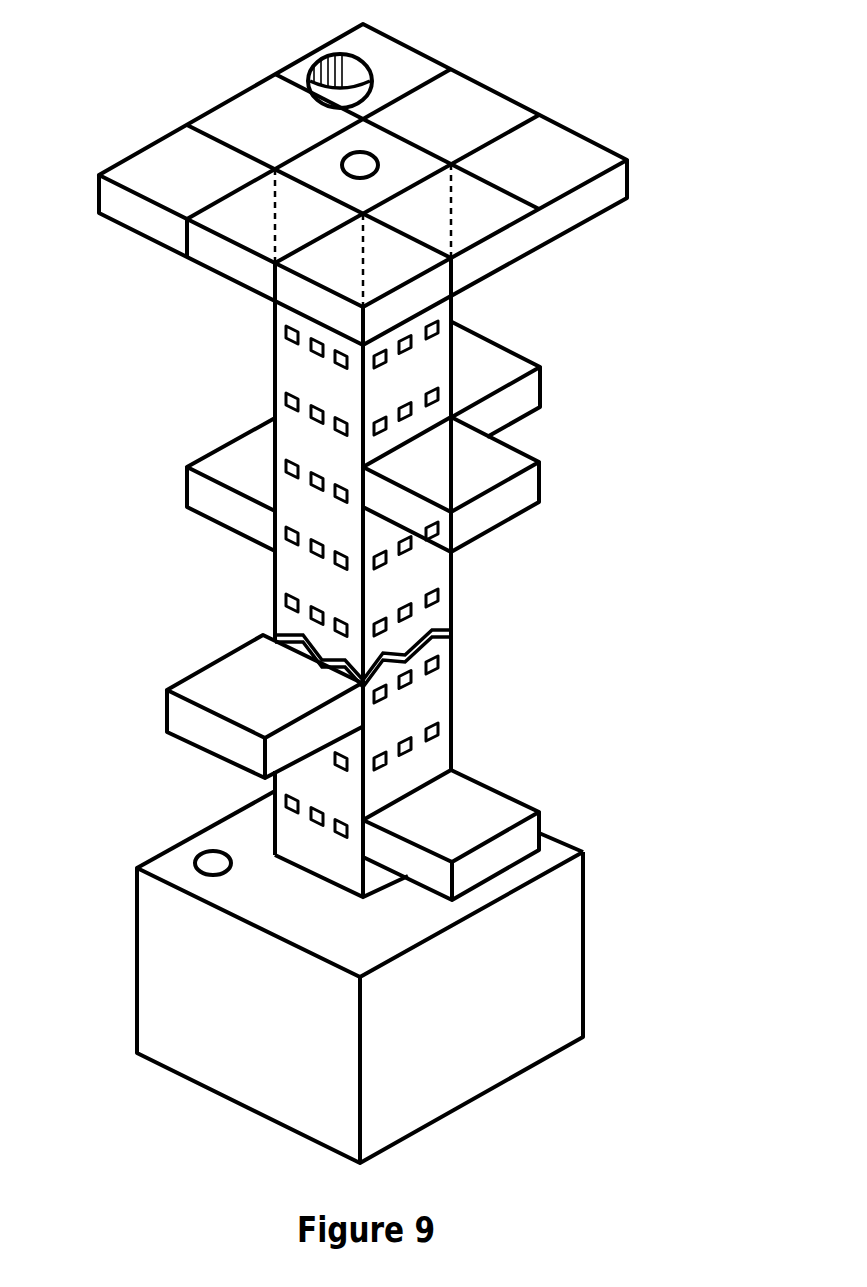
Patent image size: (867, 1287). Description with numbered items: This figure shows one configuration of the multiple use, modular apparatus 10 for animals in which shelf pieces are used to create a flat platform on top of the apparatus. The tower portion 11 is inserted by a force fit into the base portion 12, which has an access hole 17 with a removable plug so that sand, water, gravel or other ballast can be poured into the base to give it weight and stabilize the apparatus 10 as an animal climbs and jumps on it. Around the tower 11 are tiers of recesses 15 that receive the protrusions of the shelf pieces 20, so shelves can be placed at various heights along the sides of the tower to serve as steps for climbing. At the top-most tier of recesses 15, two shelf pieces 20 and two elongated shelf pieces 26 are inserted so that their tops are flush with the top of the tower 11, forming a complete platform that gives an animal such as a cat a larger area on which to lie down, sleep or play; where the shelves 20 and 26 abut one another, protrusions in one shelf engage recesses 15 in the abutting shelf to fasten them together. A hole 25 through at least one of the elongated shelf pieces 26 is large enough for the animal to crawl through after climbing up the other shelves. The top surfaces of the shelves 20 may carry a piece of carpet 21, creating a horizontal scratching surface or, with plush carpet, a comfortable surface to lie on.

The multiple use modular apparatus 10 is at (222, 602).
The tower portion 11 is at (455, 650).
The base portion 12 is at (372, 966).
The recesses 15 is at (283, 398).
The access hole 17 is at (215, 850).
The shelf pieces 20 is at (358, 478).
The carpet 21 is at (470, 362).
The hole 25 is at (309, 85).
The elongated shelf pieces 26 is at (373, 57).